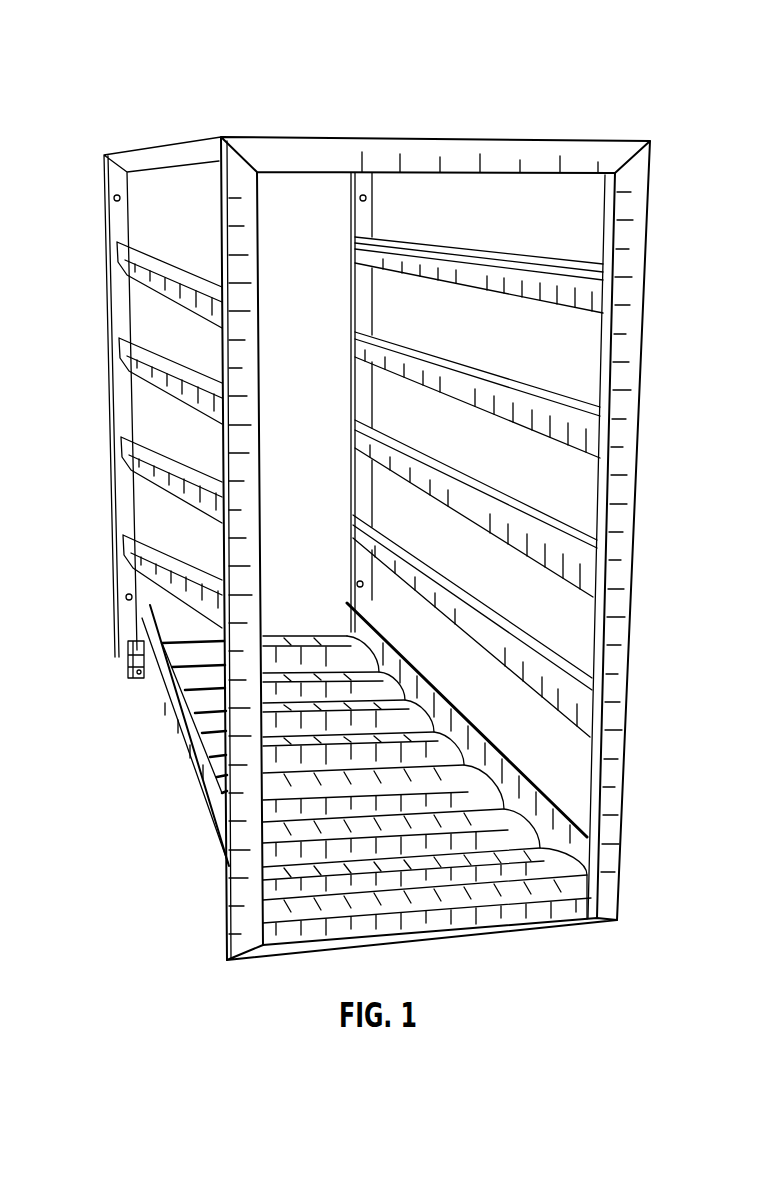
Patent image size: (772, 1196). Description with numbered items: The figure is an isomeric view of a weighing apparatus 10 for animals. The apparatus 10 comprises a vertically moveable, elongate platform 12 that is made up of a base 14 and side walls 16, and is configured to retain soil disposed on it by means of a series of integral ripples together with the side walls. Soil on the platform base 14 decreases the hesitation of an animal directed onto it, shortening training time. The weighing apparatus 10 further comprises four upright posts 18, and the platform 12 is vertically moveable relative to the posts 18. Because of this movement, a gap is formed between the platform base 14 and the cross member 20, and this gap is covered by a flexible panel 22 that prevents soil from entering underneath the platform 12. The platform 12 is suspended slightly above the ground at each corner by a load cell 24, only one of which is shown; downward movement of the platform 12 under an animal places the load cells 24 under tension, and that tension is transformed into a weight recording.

The weighing apparatus 10 is at (98, 52).
The platform 12 is at (170, 767).
The base 14 is at (335, 667).
The side walls 16 is at (216, 815).
The upright posts 18 is at (103, 232).
The cross member 20 is at (467, 930).
The flexible panel 22 is at (270, 640).
The load cell 24 is at (126, 660).